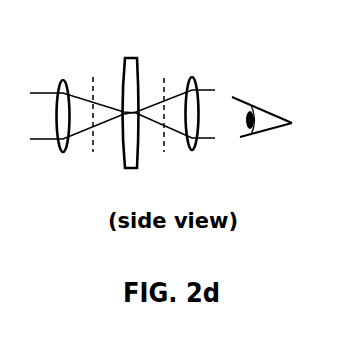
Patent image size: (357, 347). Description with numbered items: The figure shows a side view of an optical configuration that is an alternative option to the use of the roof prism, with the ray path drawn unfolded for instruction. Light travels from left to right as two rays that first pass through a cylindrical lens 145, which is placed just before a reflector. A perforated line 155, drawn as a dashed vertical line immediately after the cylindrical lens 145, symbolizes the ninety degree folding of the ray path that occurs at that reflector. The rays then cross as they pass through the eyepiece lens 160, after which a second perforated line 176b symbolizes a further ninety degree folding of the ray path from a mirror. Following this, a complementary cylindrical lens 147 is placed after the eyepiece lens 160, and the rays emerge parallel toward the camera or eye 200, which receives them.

The cylindrical lens 145 is at (55, 132).
The perforated line 155 is at (93, 76).
The eyepiece lens 160 is at (129, 128).
The perforated line 176b is at (171, 75).
The complementary cylindrical lens 147 is at (198, 131).
The camera or eye 200 is at (262, 128).